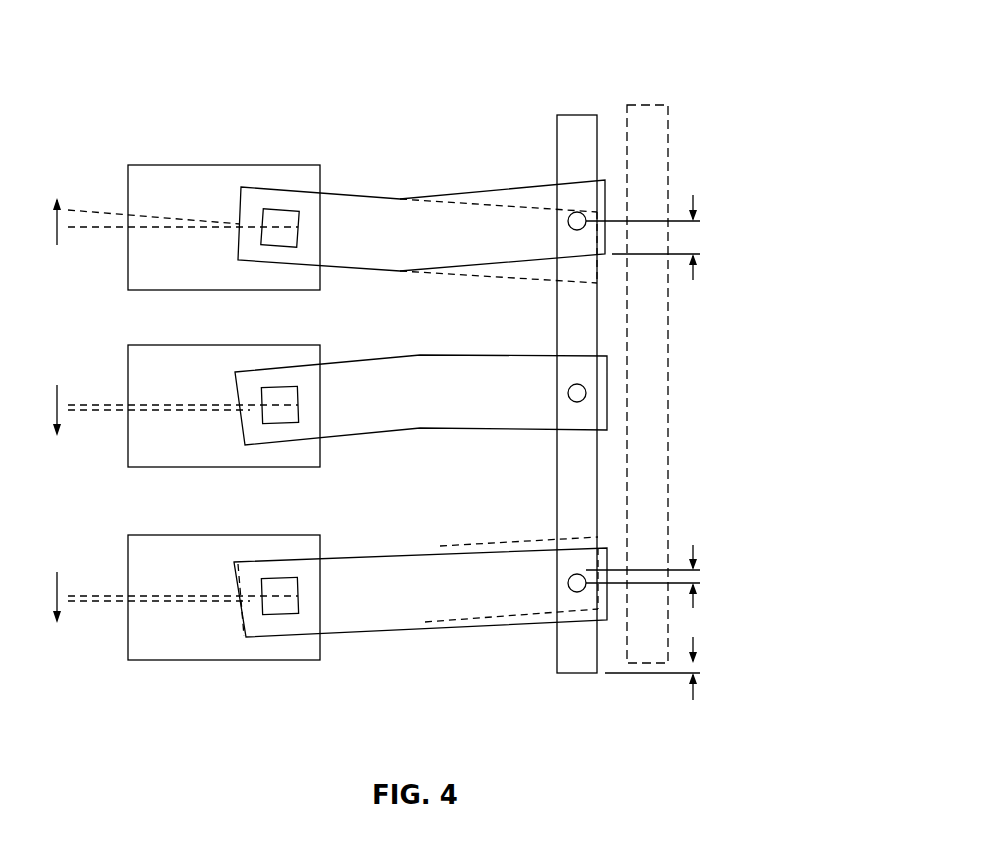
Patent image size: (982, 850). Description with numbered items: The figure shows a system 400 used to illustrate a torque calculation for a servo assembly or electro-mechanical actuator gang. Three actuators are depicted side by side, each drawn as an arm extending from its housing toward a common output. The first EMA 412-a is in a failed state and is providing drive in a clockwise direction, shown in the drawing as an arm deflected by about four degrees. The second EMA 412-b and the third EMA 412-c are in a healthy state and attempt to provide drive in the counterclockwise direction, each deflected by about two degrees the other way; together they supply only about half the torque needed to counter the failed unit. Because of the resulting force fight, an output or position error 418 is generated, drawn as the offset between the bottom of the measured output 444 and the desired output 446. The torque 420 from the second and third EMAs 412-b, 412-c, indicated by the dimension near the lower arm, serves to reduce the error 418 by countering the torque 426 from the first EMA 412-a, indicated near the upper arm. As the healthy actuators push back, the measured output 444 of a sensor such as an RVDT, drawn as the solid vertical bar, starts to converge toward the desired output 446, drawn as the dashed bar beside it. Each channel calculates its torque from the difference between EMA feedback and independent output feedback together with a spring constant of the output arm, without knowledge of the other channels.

The system 400 is at (132, 36).
The first EMA 412-a is at (213, 165).
The second EMA 412-b is at (213, 345).
The third EMA 412-c is at (213, 535).
The measured output 444 is at (552, 101).
The desired output 446 is at (672, 100).
The torque 426 is at (750, 215).
The torque 420 is at (732, 563).
The output or position error 418 is at (760, 653).